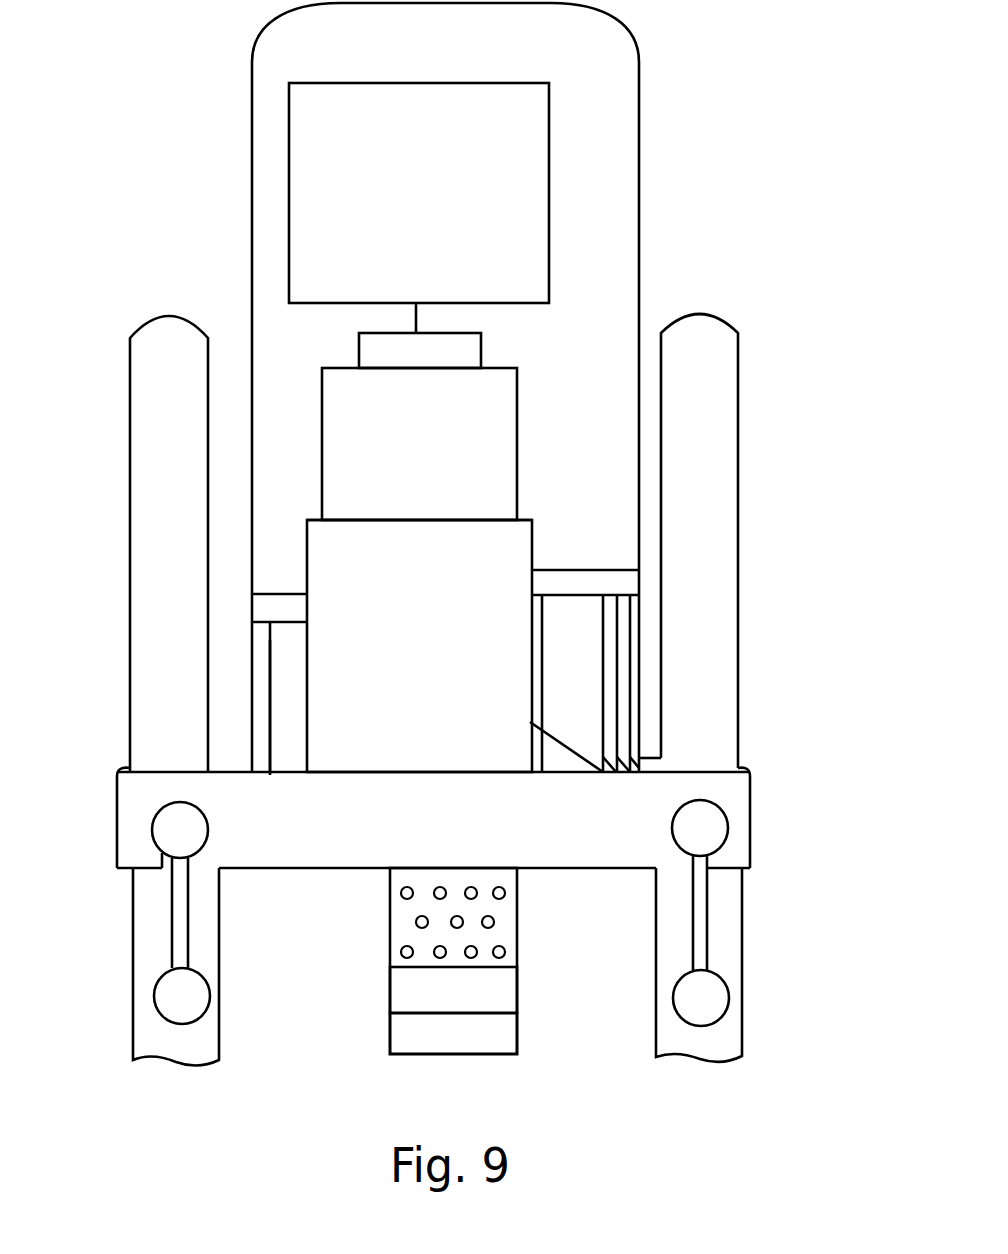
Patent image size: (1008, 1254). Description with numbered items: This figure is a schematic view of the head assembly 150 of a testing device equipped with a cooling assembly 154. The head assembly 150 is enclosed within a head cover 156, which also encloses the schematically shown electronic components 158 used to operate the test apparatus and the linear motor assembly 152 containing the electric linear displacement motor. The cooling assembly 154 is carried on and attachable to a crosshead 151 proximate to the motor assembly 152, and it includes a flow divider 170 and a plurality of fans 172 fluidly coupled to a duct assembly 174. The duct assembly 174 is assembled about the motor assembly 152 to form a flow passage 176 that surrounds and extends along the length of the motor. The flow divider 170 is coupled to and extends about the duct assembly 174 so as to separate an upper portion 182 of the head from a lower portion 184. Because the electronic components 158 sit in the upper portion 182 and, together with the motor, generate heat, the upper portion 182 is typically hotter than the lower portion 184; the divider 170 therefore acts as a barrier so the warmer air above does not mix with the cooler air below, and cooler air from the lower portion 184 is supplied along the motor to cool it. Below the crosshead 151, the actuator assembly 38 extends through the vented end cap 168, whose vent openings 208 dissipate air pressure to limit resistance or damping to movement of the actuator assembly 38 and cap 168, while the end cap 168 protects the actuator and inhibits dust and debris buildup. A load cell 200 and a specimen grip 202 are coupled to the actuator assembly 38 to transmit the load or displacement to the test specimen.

The head assembly 150 is at (444, 549).
The head cover 156 is at (639, 148).
The electronic components 158 is at (288, 216).
The actuator assembly 38 is at (463, 347).
The upper portion 182 is at (268, 351).
The flow passage 176 is at (313, 520).
The linear motor assembly 152 is at (533, 518).
The flow divider 170 is at (283, 595).
The lower portion 184 is at (260, 664).
The duct assembly 174 is at (538, 615).
The cooling assembly 154 is at (548, 647).
The fans 172 is at (268, 731).
The crosshead 151 is at (738, 810).
The end cap 168 is at (449, 981).
The vent openings 208 is at (404, 948).
The load cell 200 is at (390, 990).
The specimen grip 202 is at (440, 1037).